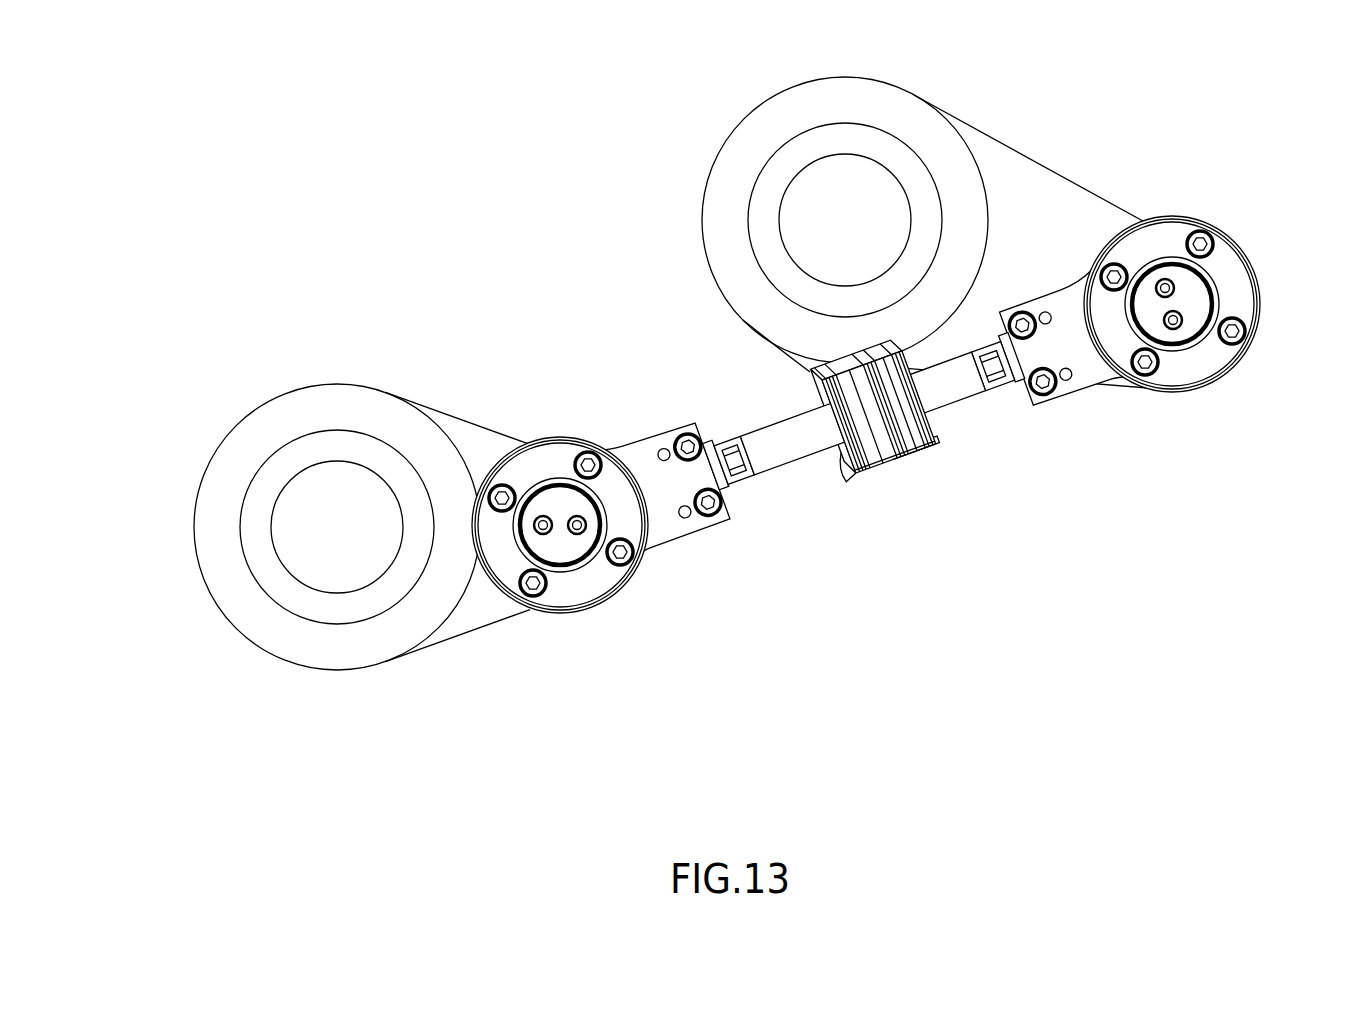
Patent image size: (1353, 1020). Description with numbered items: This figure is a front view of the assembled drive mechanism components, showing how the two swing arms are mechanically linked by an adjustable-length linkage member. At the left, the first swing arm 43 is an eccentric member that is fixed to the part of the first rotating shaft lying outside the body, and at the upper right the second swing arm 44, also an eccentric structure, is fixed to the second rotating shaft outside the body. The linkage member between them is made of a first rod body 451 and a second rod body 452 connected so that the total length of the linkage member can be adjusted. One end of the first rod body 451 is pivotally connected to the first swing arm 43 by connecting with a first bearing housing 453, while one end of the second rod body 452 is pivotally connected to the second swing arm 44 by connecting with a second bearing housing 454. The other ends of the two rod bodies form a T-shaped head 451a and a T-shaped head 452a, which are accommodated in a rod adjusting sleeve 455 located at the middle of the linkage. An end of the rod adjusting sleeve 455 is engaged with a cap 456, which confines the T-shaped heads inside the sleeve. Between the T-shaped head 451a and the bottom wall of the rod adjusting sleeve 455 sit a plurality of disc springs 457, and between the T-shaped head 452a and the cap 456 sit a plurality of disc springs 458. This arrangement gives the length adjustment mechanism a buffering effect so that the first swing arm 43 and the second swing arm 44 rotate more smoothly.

The first swing arm 43 is at (250, 413).
The second swing arm 44 is at (950, 113).
The first rod body 451 is at (778, 458).
The T-shaped head 451a is at (875, 467).
The second rod body 452 is at (965, 384).
The T-shaped head 452a is at (903, 453).
The first bearing housing 453 is at (538, 465).
The second bearing housing 454 is at (1195, 355).
The rod adjusting sleeve 455 is at (807, 378).
The cap 456 is at (905, 410).
The disc springs 457 is at (858, 483).
The disc springs 458 is at (918, 435).